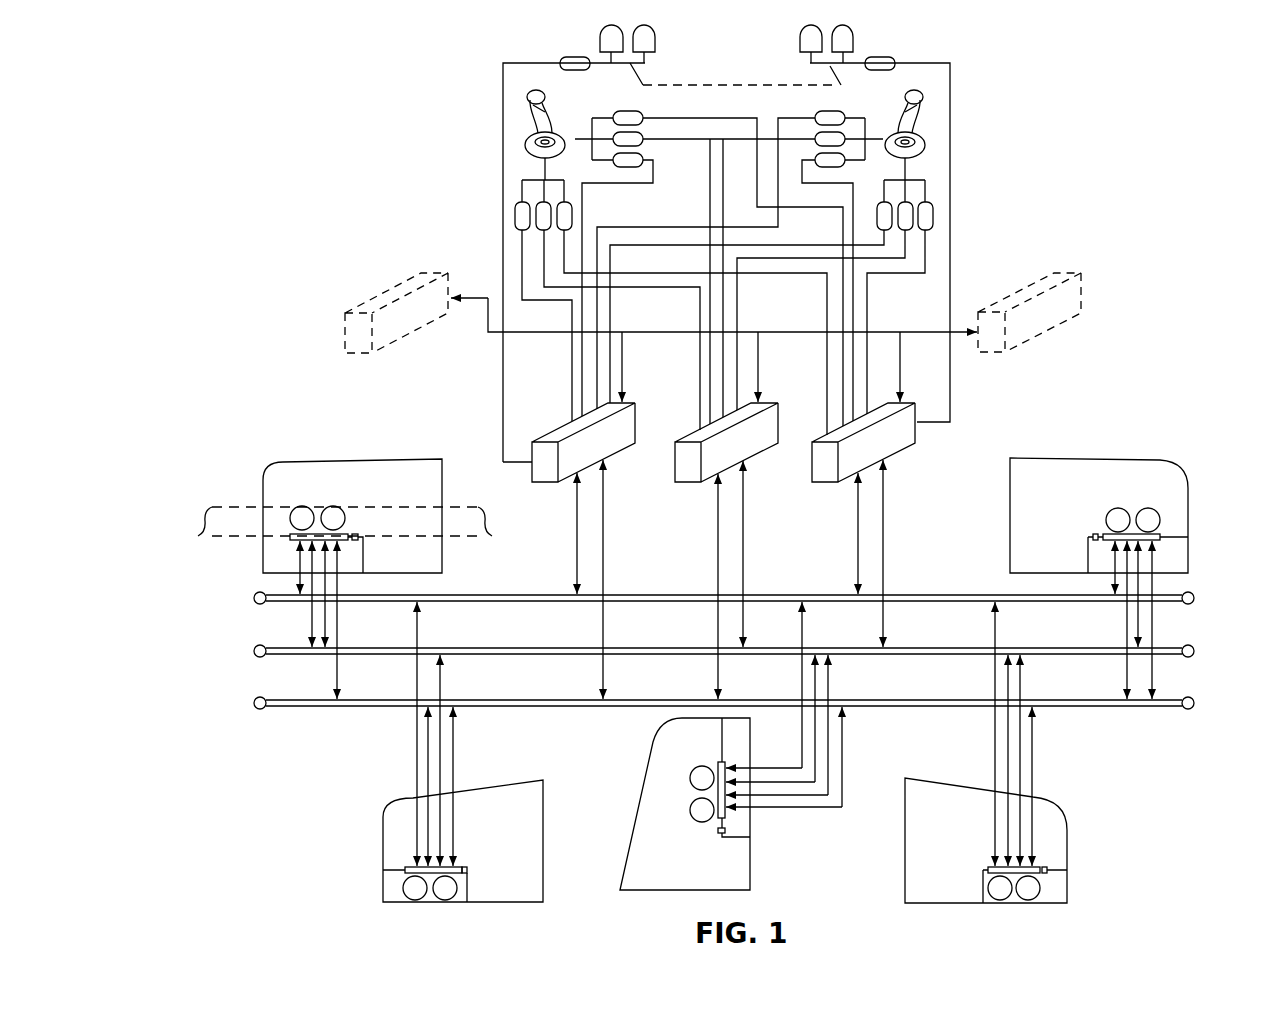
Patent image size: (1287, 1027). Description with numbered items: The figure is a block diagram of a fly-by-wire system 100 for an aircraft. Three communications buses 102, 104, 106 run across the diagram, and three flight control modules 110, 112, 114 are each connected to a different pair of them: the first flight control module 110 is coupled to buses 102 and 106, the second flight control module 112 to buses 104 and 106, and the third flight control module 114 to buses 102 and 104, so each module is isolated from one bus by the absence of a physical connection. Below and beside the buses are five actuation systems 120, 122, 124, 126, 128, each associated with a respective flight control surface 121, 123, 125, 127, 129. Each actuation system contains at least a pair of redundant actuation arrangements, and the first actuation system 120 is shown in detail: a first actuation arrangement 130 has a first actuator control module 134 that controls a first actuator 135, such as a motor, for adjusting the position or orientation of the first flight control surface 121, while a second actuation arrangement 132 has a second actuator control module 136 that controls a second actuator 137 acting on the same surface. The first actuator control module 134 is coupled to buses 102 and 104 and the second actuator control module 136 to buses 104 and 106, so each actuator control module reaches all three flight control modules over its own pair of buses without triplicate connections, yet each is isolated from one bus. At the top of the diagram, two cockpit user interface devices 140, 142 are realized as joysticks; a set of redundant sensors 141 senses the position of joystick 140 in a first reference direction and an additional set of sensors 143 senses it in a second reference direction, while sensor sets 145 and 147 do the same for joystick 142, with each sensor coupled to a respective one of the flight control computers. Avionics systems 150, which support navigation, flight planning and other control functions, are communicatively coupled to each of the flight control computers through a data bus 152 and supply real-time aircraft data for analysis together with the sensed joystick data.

The fly-by-wire system 100 is at (1207, 57).
The first communications bus 102 is at (1194, 593).
The second communications bus 104 is at (1194, 646).
The third communications bus 106 is at (1194, 698).
The first flight control module 110 is at (555, 423).
The second flight control module 112 is at (670, 466).
The third flight control module 114 is at (824, 436).
The first actuation system 120 is at (367, 537).
The first flight control surface 121 is at (430, 460).
The second actuation system 122 is at (366, 860).
The second flight control surface 123 is at (525, 781).
The third actuation system 124 is at (701, 832).
The third flight control surface 125 is at (651, 794).
The fourth actuation system 126 is at (981, 863).
The fourth flight control surface 127 is at (904, 880).
The fifth actuation system 128 is at (1107, 505).
The fifth flight control surface 129 is at (1165, 462).
The first actuation arrangement 130 is at (206, 522).
The second actuation arrangement 132 is at (488, 522).
The first actuator control module 134 is at (297, 546).
The first actuator 135 is at (302, 506).
The second actuator control module 136 is at (341, 508).
The second actuator 137 is at (333, 506).
The first cockpit user interface device 140 is at (523, 135).
The first set of redundant sensors 141 is at (511, 218).
The second cockpit user interface device 142 is at (926, 135).
The additional set of sensors 143 is at (634, 170).
The set of redundant sensors 145 is at (869, 215).
The additional set of sensors 147 is at (839, 107).
The avionics systems 150 is at (344, 333).
The data bus 152 is at (676, 335).